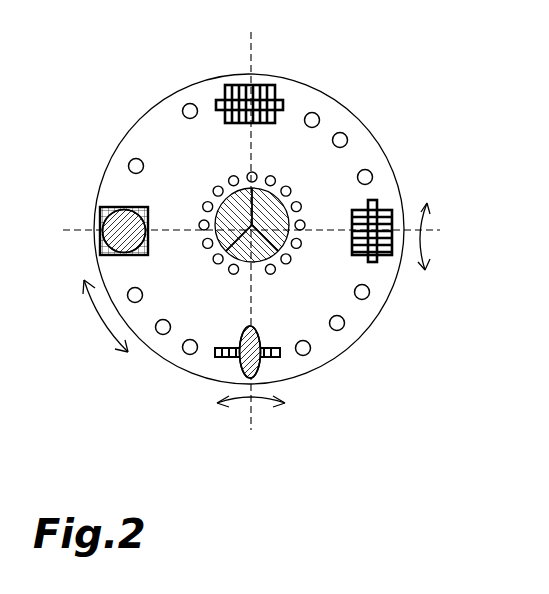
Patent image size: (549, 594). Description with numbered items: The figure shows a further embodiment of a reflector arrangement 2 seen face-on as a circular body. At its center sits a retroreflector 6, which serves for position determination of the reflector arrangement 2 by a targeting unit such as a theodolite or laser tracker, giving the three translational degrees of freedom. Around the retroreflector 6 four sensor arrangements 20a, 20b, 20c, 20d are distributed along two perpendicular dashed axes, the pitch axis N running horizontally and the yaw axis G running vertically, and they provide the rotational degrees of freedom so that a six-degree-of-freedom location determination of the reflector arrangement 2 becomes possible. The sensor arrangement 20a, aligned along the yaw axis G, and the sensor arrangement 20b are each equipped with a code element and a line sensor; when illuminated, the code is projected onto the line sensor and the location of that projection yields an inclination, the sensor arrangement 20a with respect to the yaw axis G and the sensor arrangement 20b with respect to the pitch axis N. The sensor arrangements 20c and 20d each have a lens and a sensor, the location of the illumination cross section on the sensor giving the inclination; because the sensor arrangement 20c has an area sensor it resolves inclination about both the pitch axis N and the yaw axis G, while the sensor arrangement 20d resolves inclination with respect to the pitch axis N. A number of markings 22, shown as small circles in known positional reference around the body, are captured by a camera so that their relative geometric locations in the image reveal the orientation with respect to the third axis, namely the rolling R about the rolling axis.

The reflector arrangement 2 is at (277, 40).
The retroreflector 6 is at (282, 217).
The markings 22 is at (134, 159).
The sensor arrangement 20a is at (385, 210).
The sensor arrangement 20b is at (235, 88).
The sensor arrangement 20c is at (112, 208).
The sensor arrangement 20d is at (237, 362).
The pitch axis N is at (85, 232).
The rolling R is at (95, 308).
The yaw axis G is at (252, 412).